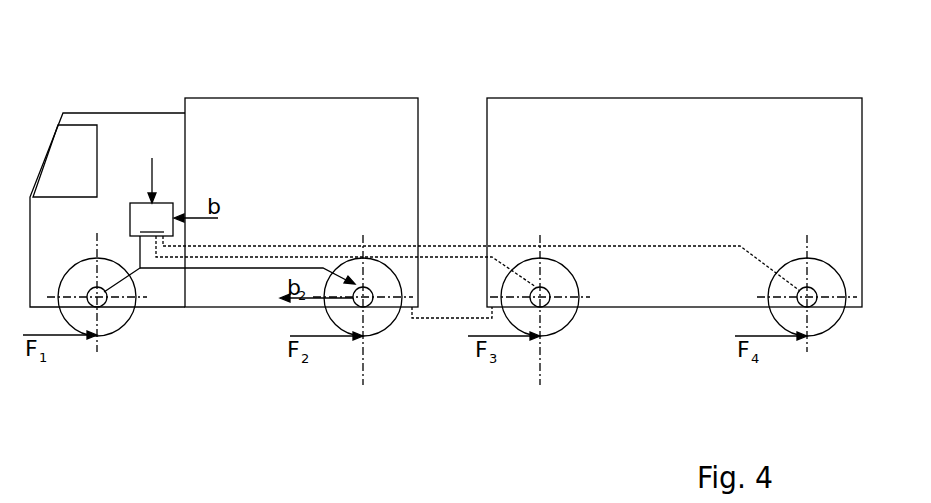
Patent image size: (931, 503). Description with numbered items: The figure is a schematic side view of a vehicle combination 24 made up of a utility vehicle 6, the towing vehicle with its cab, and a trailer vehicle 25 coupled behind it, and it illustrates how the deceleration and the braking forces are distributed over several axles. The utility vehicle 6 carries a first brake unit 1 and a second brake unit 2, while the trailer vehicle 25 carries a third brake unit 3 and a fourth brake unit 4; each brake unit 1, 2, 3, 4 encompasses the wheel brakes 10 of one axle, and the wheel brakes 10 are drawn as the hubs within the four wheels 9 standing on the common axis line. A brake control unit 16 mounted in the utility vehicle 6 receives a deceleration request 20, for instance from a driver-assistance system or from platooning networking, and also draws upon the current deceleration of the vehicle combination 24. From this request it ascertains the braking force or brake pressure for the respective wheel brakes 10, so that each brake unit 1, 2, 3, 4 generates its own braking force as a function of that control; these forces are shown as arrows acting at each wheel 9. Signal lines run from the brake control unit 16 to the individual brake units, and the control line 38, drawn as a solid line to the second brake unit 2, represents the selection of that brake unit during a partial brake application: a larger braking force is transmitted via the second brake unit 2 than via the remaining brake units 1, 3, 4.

The first brake unit 1 is at (98, 238).
The second brake unit 2 is at (362, 375).
The third brake unit 3 is at (539, 380).
The fourth brake unit 4 is at (808, 238).
The utility vehicle 6 is at (243, 107).
The wheel 9 is at (128, 323).
The wheel brakes 10 is at (88, 292).
The brake control unit 16 is at (151, 219).
The deceleration request 20 is at (137, 179).
The vehicle combination 24 is at (435, 64).
The trailer vehicle 25 is at (587, 107).
The control line 38 is at (243, 270).